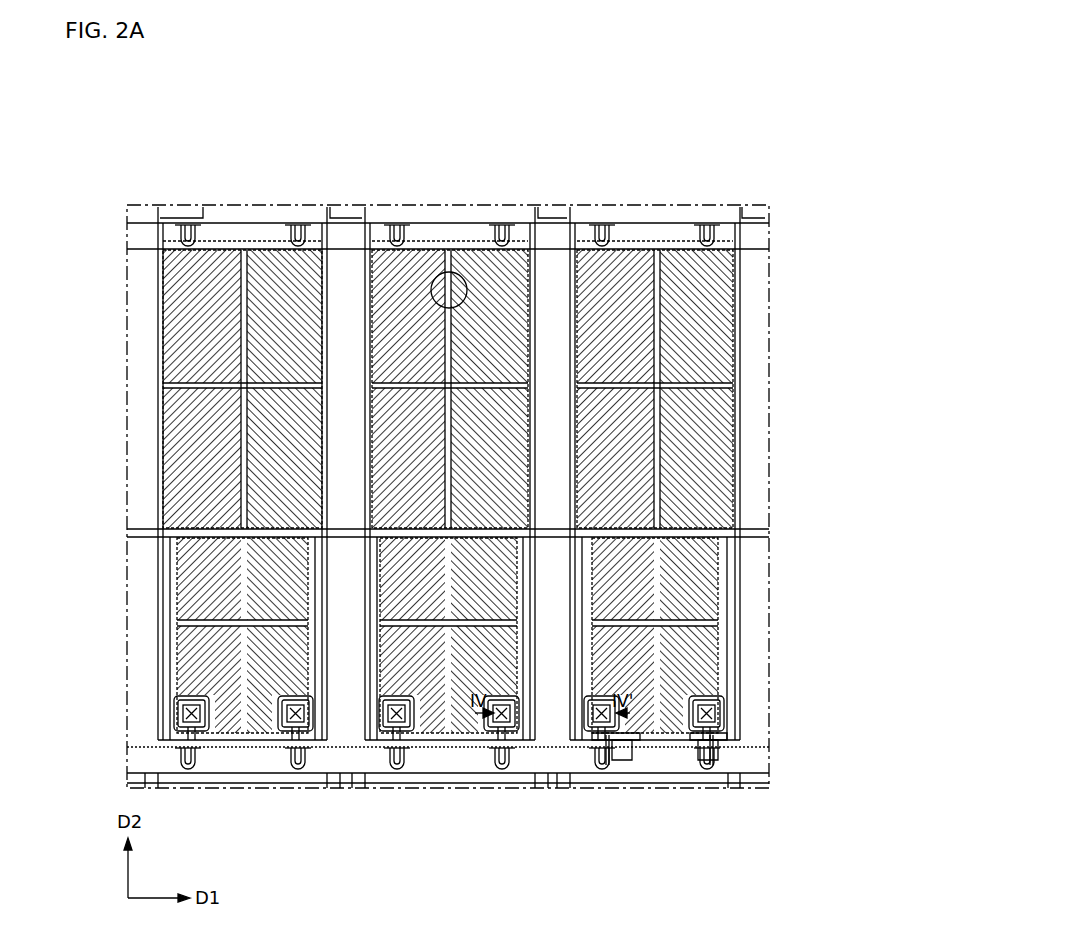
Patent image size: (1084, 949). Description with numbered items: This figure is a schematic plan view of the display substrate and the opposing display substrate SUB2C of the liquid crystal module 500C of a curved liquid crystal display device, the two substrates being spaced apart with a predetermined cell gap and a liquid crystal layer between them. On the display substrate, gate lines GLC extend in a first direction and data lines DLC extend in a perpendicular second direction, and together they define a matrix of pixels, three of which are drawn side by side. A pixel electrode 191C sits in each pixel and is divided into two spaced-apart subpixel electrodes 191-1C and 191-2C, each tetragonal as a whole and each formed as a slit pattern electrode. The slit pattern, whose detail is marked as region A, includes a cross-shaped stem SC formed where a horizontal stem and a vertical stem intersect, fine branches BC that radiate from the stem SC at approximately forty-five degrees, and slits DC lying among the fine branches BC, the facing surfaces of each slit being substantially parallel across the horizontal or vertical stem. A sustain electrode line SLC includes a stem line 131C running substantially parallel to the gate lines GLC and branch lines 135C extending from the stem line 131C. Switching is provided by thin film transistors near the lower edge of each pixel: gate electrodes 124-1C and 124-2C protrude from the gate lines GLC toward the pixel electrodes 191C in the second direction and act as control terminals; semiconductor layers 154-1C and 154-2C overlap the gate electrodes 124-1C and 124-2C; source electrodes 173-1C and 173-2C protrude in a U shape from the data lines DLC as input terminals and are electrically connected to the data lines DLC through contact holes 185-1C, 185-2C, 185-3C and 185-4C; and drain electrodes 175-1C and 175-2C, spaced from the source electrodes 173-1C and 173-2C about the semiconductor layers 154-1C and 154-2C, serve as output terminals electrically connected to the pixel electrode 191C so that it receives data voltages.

The liquid crystal module 500C is at (630, 123).
The opposing display substrate SUB2C is at (750, 199).
The gate lines GLC is at (762, 773).
The data lines DLC is at (158, 647).
The stem line 131C is at (746, 527).
The branch lines 135C is at (168, 567).
The sustain electrode line SLC is at (832, 523).
The pixel electrodes 191C is at (843, 392).
The subpixel electrode 191-1C is at (720, 586).
The subpixel electrode 191-2C is at (735, 385).
The cross-shaped stem SC is at (243, 252).
The fine branches BC is at (256, 258).
The slits DC is at (308, 378).
The region A is at (441, 273).
The contact hole 185-1C is at (720, 713).
The contact hole 185-2C is at (598, 718).
The contact hole 185-3C is at (498, 728).
The contact hole 185-4C is at (396, 728).
The semiconductor layer 154-1C is at (712, 770).
The semiconductor layer 154-2C is at (602, 772).
The gate electrode 124-1C is at (697, 760).
The gate electrode 124-2C is at (630, 756).
The source electrode 173-1C is at (702, 756).
The source electrode 173-2C is at (610, 766).
The drain electrode 175-1C is at (727, 738).
The drain electrode 175-2C is at (640, 737).